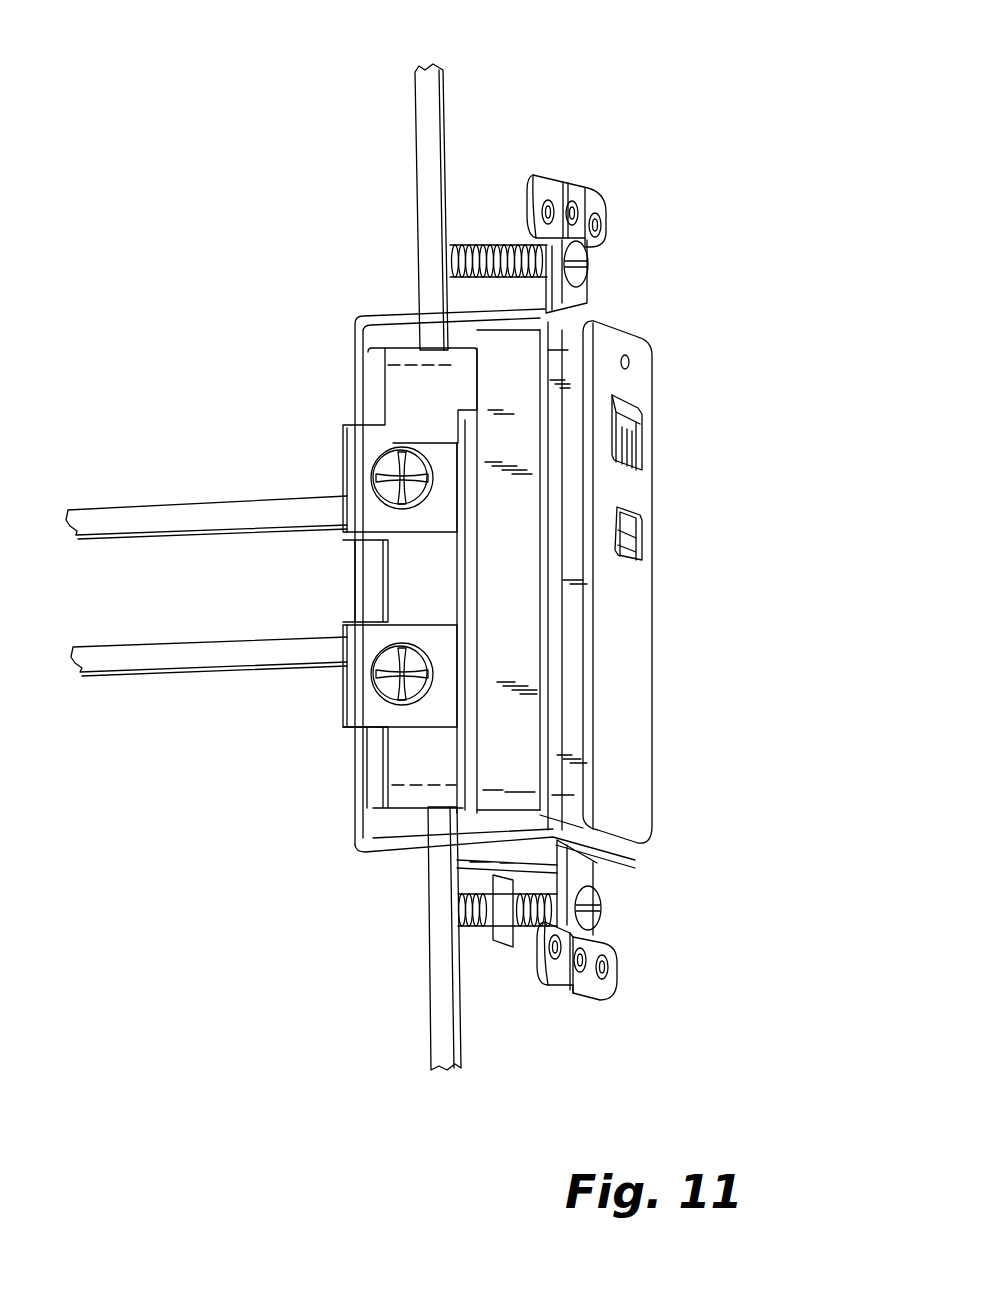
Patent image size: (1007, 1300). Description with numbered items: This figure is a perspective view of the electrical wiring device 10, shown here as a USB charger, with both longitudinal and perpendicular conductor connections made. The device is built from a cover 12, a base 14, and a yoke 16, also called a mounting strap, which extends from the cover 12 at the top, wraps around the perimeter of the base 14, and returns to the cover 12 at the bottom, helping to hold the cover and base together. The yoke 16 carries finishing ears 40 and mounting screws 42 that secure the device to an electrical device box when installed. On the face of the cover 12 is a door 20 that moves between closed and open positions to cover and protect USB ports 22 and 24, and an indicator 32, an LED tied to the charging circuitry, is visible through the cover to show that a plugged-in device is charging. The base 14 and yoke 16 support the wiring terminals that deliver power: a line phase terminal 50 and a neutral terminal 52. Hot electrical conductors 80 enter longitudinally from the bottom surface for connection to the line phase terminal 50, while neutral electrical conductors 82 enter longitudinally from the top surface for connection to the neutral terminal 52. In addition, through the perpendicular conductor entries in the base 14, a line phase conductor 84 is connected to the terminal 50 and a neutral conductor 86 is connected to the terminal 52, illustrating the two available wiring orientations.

The electrical wiring device 10 is at (201, 170).
The cover 12 is at (655, 735).
The base 14 is at (395, 344).
The yoke 16 is at (372, 858).
The door 20 is at (622, 432).
The USB port 22 is at (624, 447).
The USB port 24 is at (623, 543).
The indicator 32 is at (637, 345).
The finishing ears 40 is at (575, 176).
The mounting screws 42 is at (491, 243).
The line phase terminal 50 is at (375, 688).
The neutral terminal 52 is at (383, 472).
The electrical conductors 80 is at (438, 1030).
The electrical conductors 82 is at (424, 138).
The line phase conductor 84 is at (127, 660).
The neutral conductor 86 is at (134, 523).